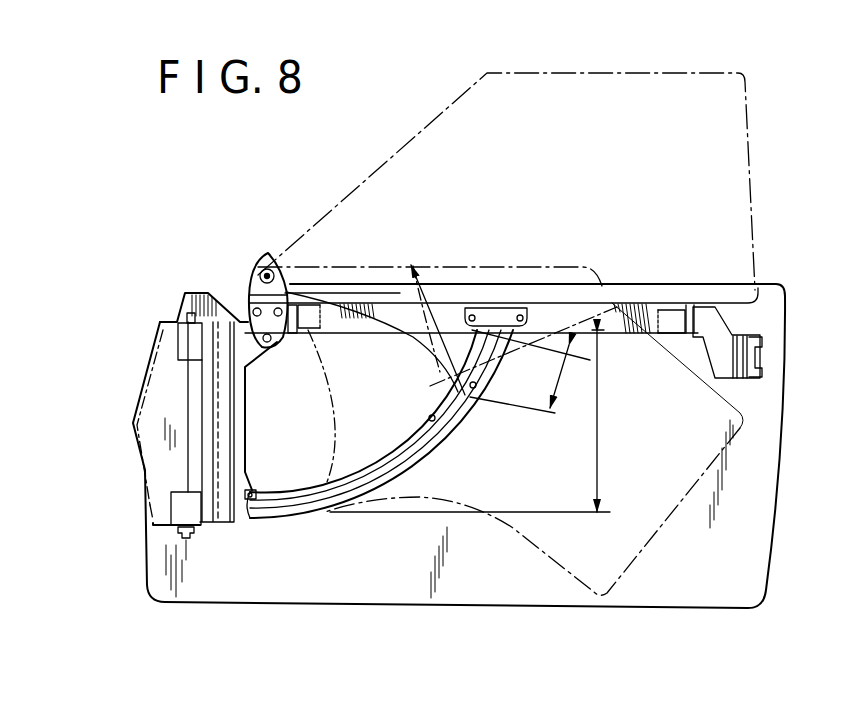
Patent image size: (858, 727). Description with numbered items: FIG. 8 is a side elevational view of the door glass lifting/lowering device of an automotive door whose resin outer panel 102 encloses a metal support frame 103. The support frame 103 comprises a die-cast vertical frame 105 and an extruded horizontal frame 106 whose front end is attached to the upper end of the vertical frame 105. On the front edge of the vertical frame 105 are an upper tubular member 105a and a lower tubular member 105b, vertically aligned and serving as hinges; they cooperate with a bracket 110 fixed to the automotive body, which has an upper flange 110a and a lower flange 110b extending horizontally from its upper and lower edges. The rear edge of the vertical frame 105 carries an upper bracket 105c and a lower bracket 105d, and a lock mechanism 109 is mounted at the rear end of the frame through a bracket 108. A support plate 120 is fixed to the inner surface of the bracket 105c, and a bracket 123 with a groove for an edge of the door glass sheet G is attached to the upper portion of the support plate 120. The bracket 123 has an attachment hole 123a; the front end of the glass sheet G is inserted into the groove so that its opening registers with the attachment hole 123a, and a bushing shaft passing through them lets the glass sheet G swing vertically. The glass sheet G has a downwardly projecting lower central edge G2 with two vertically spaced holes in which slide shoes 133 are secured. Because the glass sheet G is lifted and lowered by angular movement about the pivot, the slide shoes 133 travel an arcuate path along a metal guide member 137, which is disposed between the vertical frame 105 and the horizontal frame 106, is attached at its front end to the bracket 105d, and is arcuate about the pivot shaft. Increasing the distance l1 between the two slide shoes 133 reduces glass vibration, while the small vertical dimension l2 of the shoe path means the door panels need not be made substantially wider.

The door glass sheet G is at (677, 73).
The lower central edge G2 is at (432, 385).
The outer panel 102 is at (380, 605).
The support frame 103 is at (234, 320).
The vertical frame 105 is at (245, 407).
The upper tubular member 105a is at (162, 322).
The lower tubular member 105b is at (170, 500).
The bracket 105c is at (278, 345).
The bracket 105d is at (250, 485).
The horizontal frame 106 is at (443, 302).
The bracket 108 is at (708, 302).
The lock mechanism 109 is at (755, 335).
The bracket 110 is at (140, 397).
The upper flange 110a is at (174, 320).
The lower flange 110b is at (160, 532).
The support plate 120 is at (250, 282).
The bracket 123 is at (268, 254).
The attachment hole 123a is at (281, 272).
The slide shoes 133 is at (426, 316).
The guide member 137 is at (452, 428).
The distance between the two slide shoes l1 is at (530, 371).
The vertical dimension of the path of movement of the shoes l2 is at (481, 421).